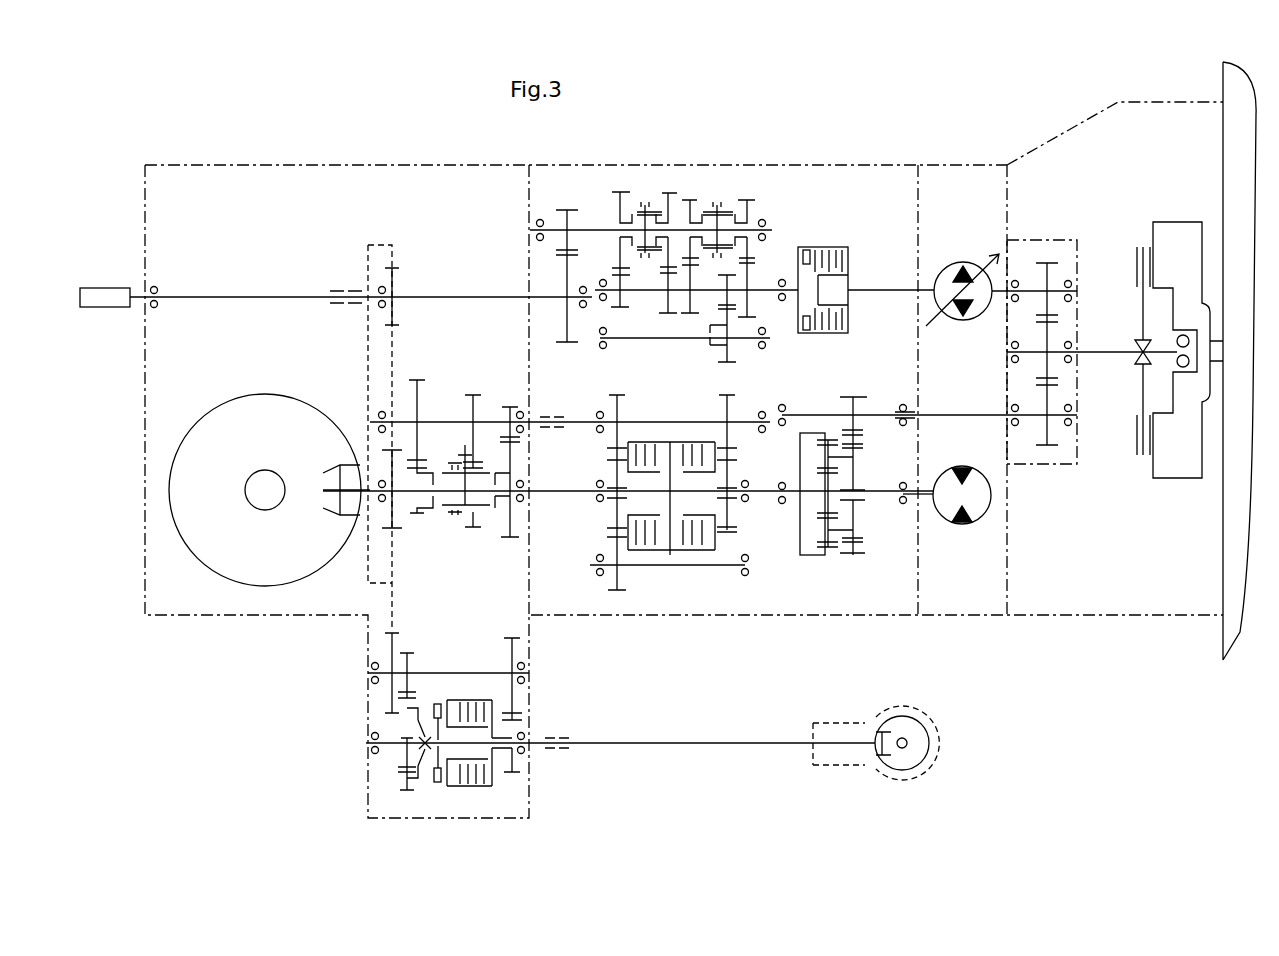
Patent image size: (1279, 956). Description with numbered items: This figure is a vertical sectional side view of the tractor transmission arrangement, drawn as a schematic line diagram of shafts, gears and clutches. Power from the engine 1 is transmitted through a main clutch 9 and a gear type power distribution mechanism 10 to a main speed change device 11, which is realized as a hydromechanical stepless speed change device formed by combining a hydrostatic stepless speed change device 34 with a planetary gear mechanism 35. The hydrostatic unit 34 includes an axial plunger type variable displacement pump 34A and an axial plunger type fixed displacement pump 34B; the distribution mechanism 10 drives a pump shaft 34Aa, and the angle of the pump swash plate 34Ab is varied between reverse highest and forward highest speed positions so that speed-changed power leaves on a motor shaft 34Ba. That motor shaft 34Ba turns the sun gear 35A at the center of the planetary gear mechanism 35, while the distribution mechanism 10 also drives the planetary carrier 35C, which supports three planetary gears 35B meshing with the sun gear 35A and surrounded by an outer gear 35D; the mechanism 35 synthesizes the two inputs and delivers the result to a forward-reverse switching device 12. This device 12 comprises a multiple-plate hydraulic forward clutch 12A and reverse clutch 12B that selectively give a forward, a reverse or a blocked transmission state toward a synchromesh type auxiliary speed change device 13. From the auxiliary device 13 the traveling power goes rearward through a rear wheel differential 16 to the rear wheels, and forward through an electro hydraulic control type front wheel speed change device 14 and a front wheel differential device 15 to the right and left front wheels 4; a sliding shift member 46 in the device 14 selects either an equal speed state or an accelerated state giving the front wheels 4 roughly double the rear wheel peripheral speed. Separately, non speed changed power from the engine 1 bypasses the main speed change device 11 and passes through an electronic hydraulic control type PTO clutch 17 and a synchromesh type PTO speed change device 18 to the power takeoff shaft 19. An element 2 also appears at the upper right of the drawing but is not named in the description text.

The engine 1 is at (1232, 80).
The vehicle body frame 2 is at (1094, 111).
The front wheels 4 is at (783, 165).
The main clutch 9 is at (1179, 208).
The gear type power distribution mechanism 10 is at (1051, 487).
The main speed change device 11 is at (994, 597).
The forward-reverse switching device 12 is at (669, 536).
The forward clutch 12A is at (709, 527).
The reverse clutch 12B is at (656, 566).
The synchromesh type auxiliary speed change device 13 is at (386, 566).
The front wheel speed change device 14 is at (415, 741).
The front wheel differential device 15 is at (946, 748).
The rear wheel differential 16 is at (236, 386).
The PTO clutch 17 is at (856, 232).
The PTO speed change device 18 is at (648, 180).
The power takeoff (PTO) shaft 19 is at (108, 293).
The hydrostatic stepless speed change device (HST) 34 is at (933, 347).
The axial plunger type variable displacement pump 34A is at (957, 262).
The pump shaft 34Aa is at (890, 289).
The pump swash plate 34Ab is at (930, 330).
The axial plunger type fixed displacement pump 34B is at (948, 524).
The motor shaft 34Ba is at (893, 488).
The planetary gear mechanism 35 is at (826, 527).
The sun gear 35A is at (830, 505).
The planetary gears 35B is at (800, 452).
The planetary carrier 35C is at (853, 480).
The outer gear 35D is at (815, 558).
The shift member 46 is at (438, 782).